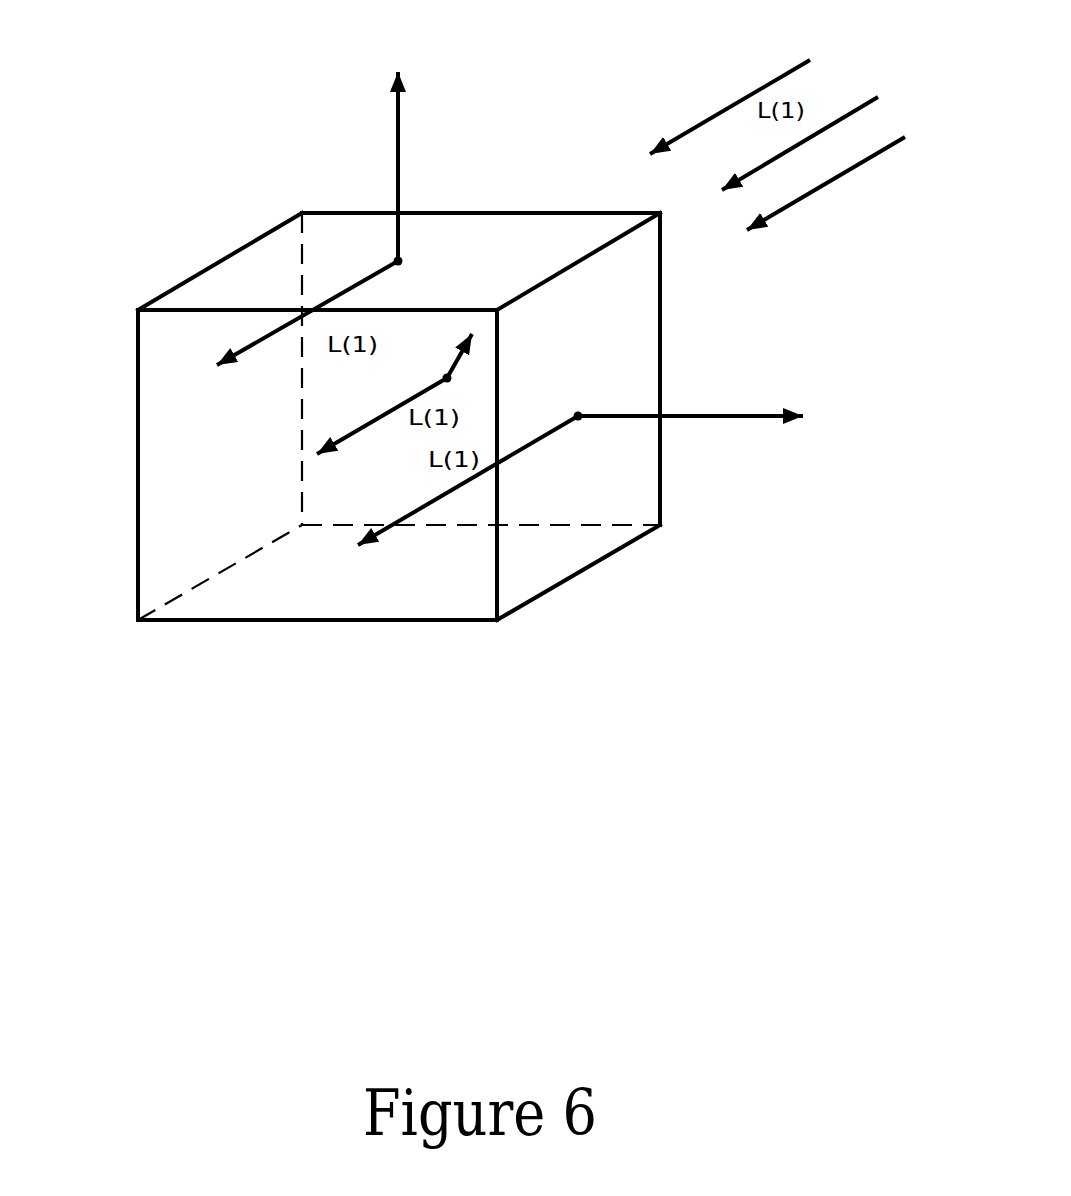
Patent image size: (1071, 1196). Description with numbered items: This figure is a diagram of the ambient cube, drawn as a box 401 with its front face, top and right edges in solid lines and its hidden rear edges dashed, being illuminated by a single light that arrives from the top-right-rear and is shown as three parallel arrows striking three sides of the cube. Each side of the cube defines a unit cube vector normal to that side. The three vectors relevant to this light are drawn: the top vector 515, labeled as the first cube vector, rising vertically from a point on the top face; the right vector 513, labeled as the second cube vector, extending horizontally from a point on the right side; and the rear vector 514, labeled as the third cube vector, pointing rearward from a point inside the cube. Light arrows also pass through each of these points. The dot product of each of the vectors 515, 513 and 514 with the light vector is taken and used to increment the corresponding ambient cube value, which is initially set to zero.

The integrating cavity / cube 401 is at (137, 584).
The right vector 513 is at (722, 414).
The rear vector 514 is at (461, 350).
The top vector 515 is at (398, 152).